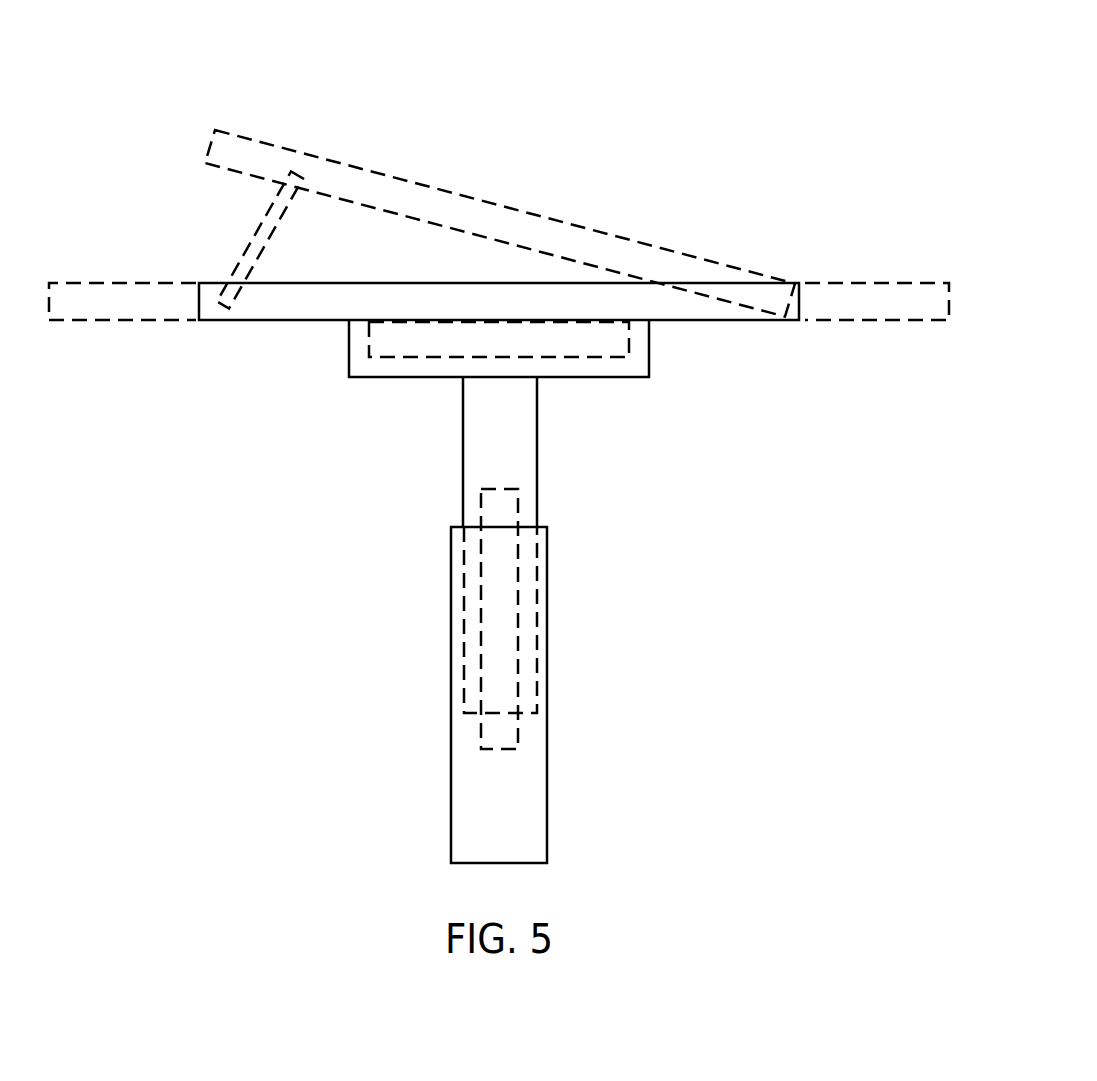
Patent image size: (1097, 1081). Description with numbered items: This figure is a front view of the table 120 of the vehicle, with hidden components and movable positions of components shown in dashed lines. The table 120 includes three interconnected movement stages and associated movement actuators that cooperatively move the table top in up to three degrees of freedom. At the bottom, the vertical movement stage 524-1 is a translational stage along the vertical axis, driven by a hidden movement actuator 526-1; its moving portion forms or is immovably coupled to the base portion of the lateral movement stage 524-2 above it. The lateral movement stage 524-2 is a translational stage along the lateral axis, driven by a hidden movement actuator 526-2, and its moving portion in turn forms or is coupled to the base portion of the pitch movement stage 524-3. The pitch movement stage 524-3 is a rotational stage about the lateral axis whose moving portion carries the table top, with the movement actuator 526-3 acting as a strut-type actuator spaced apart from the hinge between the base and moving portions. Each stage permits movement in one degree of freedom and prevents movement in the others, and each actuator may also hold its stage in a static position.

The table 120 is at (774, 34).
The vertical movement stage 524-1 is at (667, 673).
The lateral movement stage 524-2 is at (603, 489).
The pitch movement stage 524-3 is at (385, 127).
The movement actuator of the vertical movement stage 526-1 is at (518, 618).
The movement actuator of the lateral movement stage 526-2 is at (577, 358).
The movement actuator of the pitch movement stage 526-3 is at (263, 222).